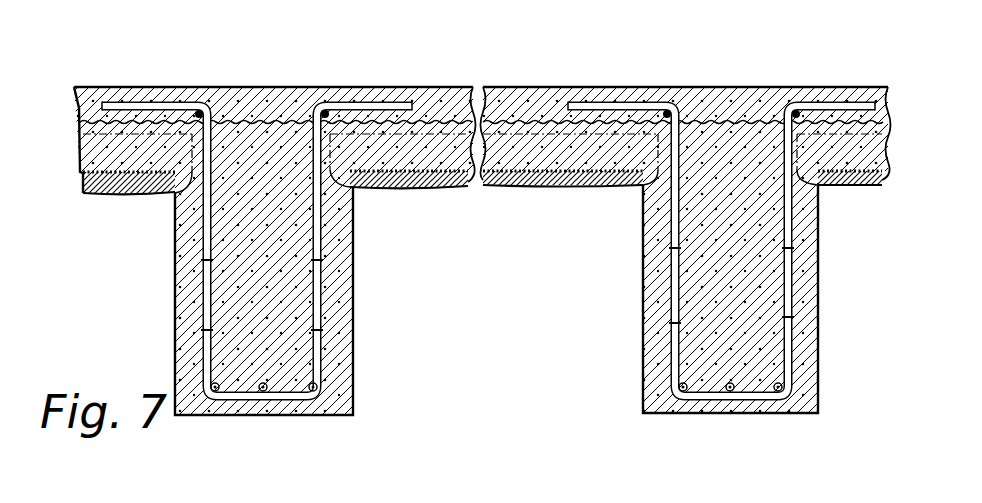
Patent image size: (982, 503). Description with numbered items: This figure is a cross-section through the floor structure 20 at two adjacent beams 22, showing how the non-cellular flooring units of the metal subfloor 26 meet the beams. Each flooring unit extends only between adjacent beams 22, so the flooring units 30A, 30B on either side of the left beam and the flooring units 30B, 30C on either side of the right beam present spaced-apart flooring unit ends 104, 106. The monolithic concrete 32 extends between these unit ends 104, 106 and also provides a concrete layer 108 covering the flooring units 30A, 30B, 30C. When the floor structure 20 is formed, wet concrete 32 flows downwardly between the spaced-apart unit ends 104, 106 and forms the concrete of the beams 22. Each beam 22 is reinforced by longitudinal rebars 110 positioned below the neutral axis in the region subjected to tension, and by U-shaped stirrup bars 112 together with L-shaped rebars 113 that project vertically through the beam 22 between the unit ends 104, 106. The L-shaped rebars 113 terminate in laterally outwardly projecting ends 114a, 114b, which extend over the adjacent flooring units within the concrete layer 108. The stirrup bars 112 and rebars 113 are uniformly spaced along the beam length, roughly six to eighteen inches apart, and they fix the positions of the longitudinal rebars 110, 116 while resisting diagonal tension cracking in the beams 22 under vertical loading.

The floor structure 20 is at (729, 70).
The beam 22 is at (165, 330).
The metal subfloor 26 is at (398, 186).
The flooring unit 30A is at (128, 195).
The flooring unit 30B is at (527, 186).
The flooring unit 30C is at (843, 186).
The concrete 32 is at (242, 98).
The flooring unit end 104 is at (176, 218).
The flooring unit end 106 is at (352, 212).
The concrete layer 108 is at (466, 88).
The longitudinal rebar 110 is at (220, 393).
The stirrup bar 112 is at (330, 368).
The L-shaped rebar 113 is at (203, 292).
The laterally outwardly projecting end 114a is at (124, 100).
The laterally outwardly projecting end 114b is at (370, 100).
The longitudinal rebar 116 is at (195, 102).